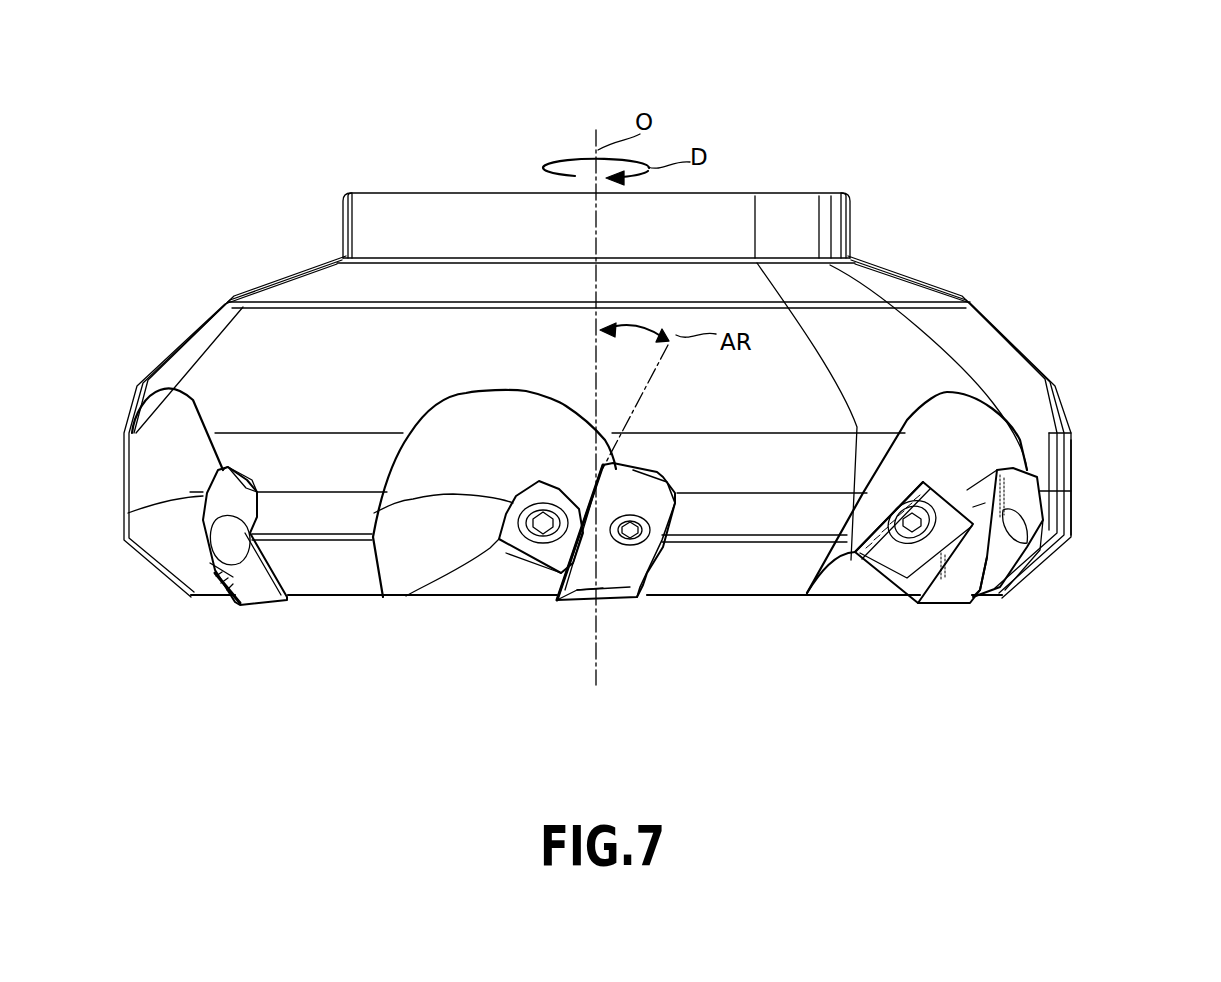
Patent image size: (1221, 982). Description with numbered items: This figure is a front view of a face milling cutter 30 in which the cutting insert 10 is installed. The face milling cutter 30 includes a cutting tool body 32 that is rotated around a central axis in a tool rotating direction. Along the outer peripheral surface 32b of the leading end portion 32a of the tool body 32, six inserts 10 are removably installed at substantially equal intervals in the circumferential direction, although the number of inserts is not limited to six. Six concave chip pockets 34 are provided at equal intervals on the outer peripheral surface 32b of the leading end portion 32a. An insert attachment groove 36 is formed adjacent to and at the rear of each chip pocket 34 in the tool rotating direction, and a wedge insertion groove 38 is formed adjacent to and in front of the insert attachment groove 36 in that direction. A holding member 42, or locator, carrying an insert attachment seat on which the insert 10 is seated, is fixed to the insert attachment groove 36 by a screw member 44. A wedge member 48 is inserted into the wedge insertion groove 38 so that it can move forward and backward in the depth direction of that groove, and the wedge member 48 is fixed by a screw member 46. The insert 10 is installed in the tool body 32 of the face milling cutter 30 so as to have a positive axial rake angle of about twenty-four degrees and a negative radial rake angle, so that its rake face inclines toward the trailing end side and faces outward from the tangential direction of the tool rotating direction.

The face milling cutter 30 is at (839, 99).
The cutting tool body 32 is at (990, 318).
The leading end portion 32a is at (803, 705).
The outer peripheral surface 32b is at (1092, 527).
The chip pocket 34 is at (197, 404).
The insert attachment groove 36 is at (272, 593).
The wedge insertion groove 38 is at (455, 566).
The cutting insert 10 is at (233, 600).
The holding member 42 is at (610, 592).
The screw member 44 is at (650, 515).
The screw member 46 is at (540, 544).
The wedge member 48 is at (537, 500).